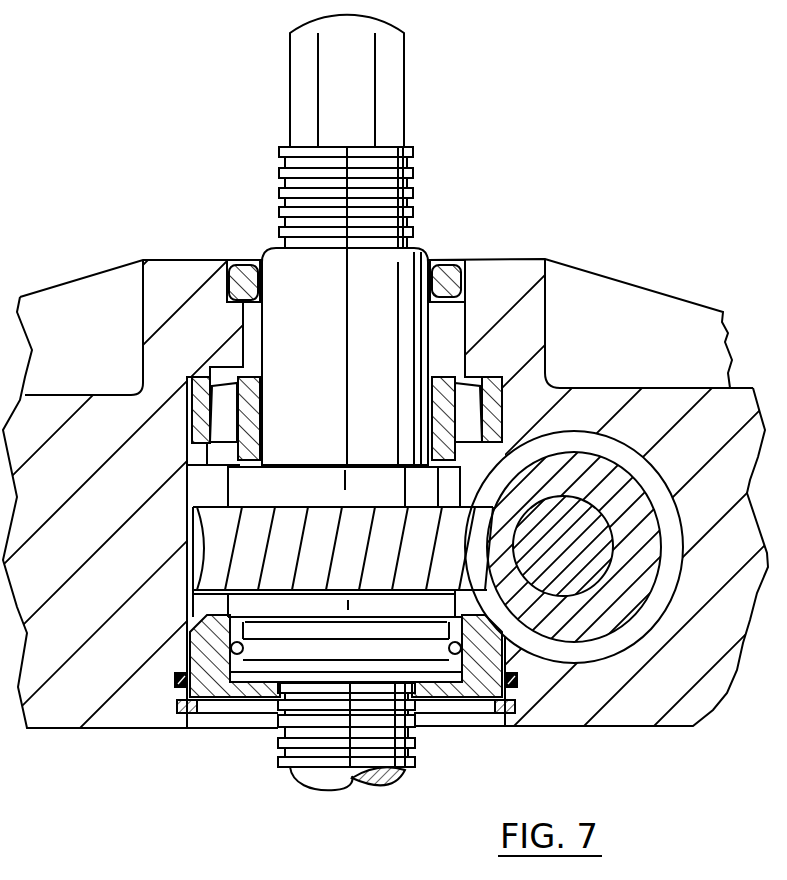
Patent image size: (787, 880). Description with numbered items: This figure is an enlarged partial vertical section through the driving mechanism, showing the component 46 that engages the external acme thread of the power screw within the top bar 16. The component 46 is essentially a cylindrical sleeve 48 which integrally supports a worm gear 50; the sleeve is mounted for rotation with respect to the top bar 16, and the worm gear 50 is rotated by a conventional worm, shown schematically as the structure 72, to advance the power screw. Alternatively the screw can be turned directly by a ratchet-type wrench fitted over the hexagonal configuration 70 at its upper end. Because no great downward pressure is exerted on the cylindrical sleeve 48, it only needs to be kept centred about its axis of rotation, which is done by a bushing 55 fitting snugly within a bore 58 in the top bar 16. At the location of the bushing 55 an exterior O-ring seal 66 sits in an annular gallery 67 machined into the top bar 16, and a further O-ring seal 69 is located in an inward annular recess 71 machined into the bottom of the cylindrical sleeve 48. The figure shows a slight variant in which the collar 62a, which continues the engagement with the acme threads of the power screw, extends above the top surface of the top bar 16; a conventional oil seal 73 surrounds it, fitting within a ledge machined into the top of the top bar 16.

The top bar 16 is at (547, 365).
The component 46 is at (238, 478).
The cylindrical sleeve 48 is at (378, 603).
The worm gear 50 is at (217, 538).
The bushing 55 is at (195, 650).
The bore 58 is at (190, 603).
The collar 62a is at (410, 358).
The O-ring seal 66 is at (517, 677).
The annular gallery 67 is at (515, 699).
The O-ring seal 69 is at (241, 645).
The hexagonal configuration 70 is at (363, 97).
The inward annular recess 71 is at (453, 645).
The worm 72 is at (668, 510).
The oil seal 73 is at (250, 259).